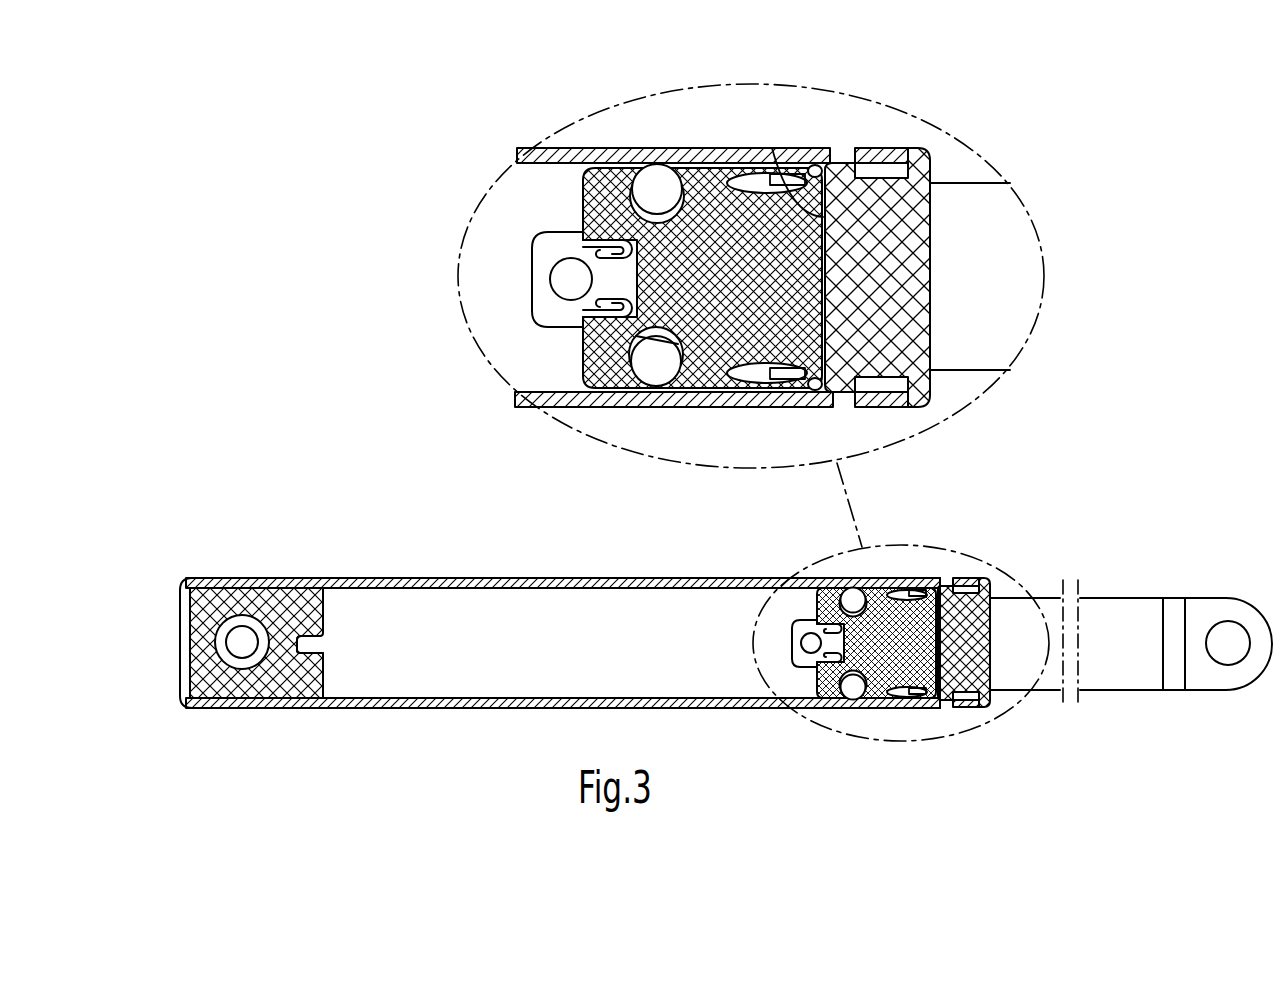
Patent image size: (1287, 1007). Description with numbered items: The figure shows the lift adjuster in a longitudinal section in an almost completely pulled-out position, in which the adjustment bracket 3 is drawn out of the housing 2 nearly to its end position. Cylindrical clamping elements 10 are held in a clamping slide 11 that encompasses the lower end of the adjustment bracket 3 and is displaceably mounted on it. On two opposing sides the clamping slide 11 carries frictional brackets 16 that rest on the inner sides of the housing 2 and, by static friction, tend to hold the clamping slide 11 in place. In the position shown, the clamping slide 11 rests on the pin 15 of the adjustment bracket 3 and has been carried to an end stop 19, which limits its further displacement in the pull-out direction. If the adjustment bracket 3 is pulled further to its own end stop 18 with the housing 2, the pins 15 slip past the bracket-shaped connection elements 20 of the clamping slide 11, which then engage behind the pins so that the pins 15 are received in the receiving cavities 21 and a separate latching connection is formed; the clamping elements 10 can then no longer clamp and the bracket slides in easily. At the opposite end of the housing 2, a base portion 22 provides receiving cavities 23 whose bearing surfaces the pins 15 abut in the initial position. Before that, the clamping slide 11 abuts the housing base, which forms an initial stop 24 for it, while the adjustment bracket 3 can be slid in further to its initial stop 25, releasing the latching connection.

The housing 2 is at (430, 578).
The adjustment bracket 3 is at (1117, 613).
The clamping elements 10 is at (652, 185).
The clamping slide 11 is at (880, 667).
The pin 15 is at (565, 282).
The frictional brackets 16 is at (800, 176).
The end stop 18 is at (810, 388).
The end stop 19 is at (772, 148).
The connection elements 20 is at (598, 262).
The receiving cavities 21 is at (708, 240).
The base portion 22 is at (205, 605).
The receiving cavities 23 is at (318, 642).
The initial stop 24 is at (324, 672).
The initial stop 25 is at (317, 607).